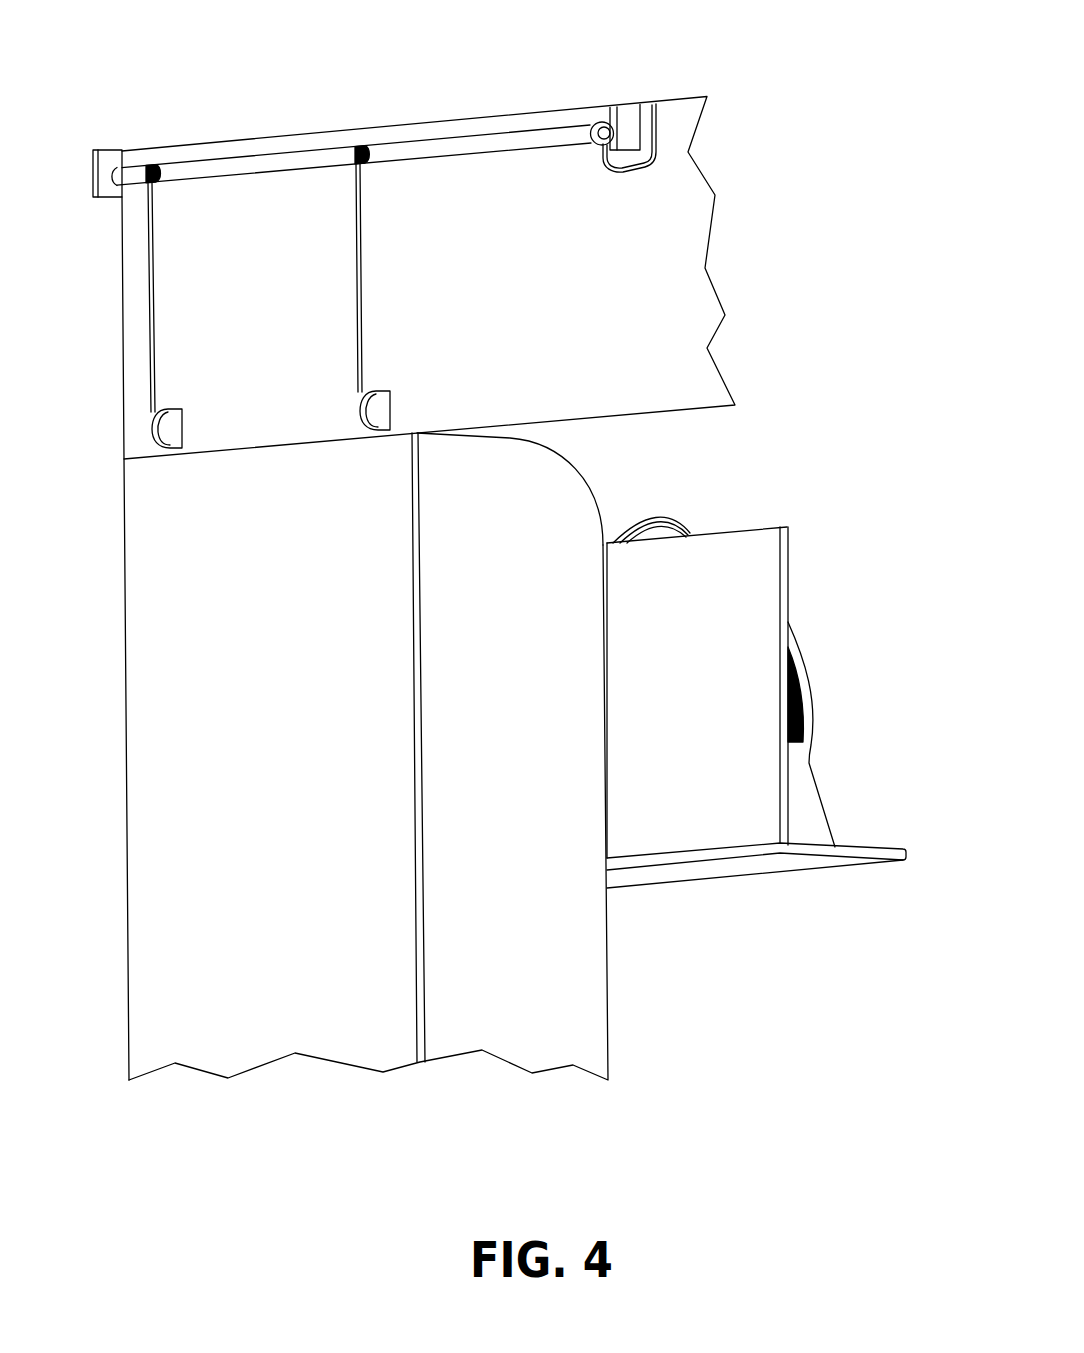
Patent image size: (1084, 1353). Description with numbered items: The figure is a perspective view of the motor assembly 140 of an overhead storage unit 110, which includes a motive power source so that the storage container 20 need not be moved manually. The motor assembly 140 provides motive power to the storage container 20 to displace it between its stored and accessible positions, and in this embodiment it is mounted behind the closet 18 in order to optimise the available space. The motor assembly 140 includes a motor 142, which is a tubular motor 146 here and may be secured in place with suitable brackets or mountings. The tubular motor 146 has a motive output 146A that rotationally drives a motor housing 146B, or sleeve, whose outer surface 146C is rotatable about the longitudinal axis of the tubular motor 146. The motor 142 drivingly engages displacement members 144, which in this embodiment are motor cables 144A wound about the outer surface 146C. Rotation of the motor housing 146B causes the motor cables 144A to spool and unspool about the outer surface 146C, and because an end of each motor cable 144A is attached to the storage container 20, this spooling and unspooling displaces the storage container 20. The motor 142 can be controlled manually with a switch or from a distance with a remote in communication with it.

The closet 18 is at (545, 1050).
The storage container 20 is at (722, 846).
The storage unit 110 is at (827, 906).
The motor assembly 140 is at (328, 112).
The motor 142 is at (610, 132).
The displacement members 144 is at (152, 319).
The motor cables 144A is at (358, 237).
The tubular motor 146 is at (205, 126).
The motive output 146A is at (606, 133).
The motor housing 146B is at (272, 167).
The outer surface 146C is at (423, 147).